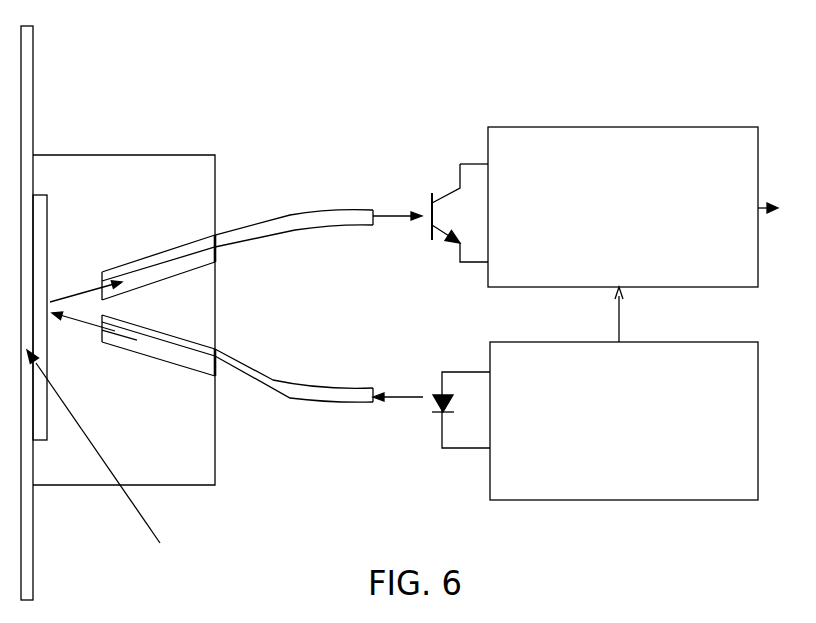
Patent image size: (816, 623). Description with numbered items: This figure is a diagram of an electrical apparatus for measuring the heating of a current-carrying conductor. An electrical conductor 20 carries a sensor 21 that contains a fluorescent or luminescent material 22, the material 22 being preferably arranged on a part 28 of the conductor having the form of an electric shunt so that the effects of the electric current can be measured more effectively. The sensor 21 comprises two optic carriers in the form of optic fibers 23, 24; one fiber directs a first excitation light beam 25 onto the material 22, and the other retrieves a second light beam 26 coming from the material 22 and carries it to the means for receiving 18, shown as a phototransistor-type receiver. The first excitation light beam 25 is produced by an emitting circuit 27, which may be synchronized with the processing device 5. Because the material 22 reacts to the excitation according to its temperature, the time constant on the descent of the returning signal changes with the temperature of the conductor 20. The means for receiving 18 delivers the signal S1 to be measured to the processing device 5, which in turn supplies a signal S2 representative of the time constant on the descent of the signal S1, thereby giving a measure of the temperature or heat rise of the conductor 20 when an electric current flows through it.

The electrical conductor 20 is at (33, 93).
The sensor 21 is at (169, 172).
The fluorescent or luminescent material 22 is at (42, 427).
The optic fiber 23 is at (275, 228).
The optic fiber 24 is at (287, 390).
The first excitation light beam 25 is at (92, 320).
The second light beam 26 is at (85, 292).
The emitting circuit 27 is at (678, 497).
The part of the conductor having the form of an electric shunt 28 is at (101, 463).
The means for receiving 18 is at (445, 188).
The processing device 5 is at (683, 126).
The signal to be measured S1 is at (474, 163).
The signal representative of a time constant S2 is at (772, 217).